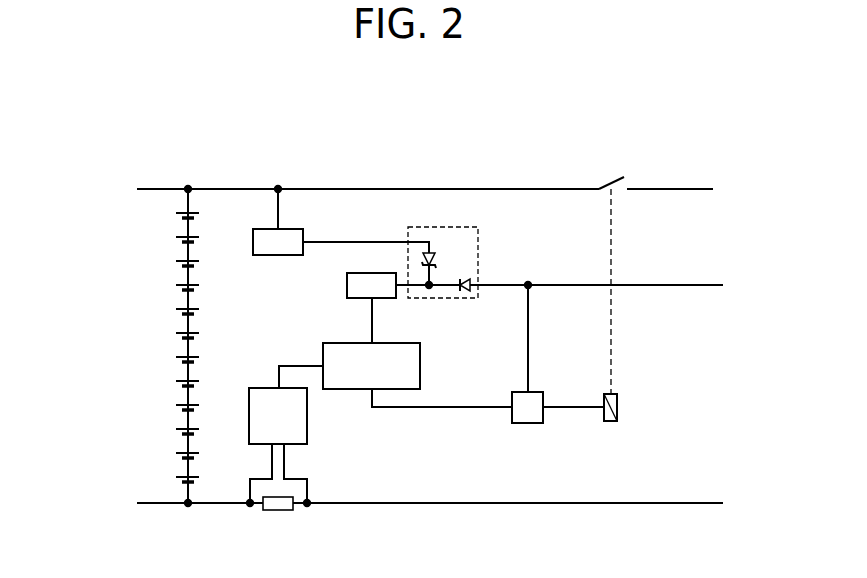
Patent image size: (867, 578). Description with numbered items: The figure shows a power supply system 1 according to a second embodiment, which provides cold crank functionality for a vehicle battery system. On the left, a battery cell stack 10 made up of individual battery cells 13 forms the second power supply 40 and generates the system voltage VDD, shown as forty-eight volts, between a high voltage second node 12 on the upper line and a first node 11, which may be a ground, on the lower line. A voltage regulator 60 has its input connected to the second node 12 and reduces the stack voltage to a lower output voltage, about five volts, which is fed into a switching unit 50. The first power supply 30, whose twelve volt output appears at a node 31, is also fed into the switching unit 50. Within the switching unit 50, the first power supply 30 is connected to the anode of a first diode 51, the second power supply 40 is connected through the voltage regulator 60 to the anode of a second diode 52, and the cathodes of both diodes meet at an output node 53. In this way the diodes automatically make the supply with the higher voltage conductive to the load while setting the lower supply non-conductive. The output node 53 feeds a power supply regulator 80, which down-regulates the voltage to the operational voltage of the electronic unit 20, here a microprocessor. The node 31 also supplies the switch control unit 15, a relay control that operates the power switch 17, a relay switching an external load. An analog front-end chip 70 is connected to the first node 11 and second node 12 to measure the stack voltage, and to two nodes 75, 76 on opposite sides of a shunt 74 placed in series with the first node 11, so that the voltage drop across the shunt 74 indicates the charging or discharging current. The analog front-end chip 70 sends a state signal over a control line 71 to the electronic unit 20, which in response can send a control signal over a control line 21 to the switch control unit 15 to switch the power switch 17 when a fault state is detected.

The power supply system 1 is at (486, 149).
The battery cell stack 10 is at (148, 346).
The second power supply 40 is at (137, 189).
The first node 11 is at (188, 508).
The second node 12 is at (188, 187).
The battery cell 13 is at (196, 237).
The switch control unit 15 is at (533, 392).
The power switch 17 is at (611, 177).
The electronic unit 20 is at (345, 343).
The control line 21 is at (442, 413).
The first power supply 30 is at (723, 286).
The node 31 is at (528, 283).
The switching unit 50 is at (444, 228).
The first diode 51 is at (465, 299).
The second diode 52 is at (437, 260).
The output node 53 is at (429, 299).
The voltage regulator 60 is at (304, 229).
The analog front-end chip 70 is at (308, 428).
The control line 71 is at (301, 362).
The shunt 74 is at (280, 512).
The node 75 is at (308, 508).
The node 76 is at (250, 508).
The power supply regulator 80 is at (347, 285).